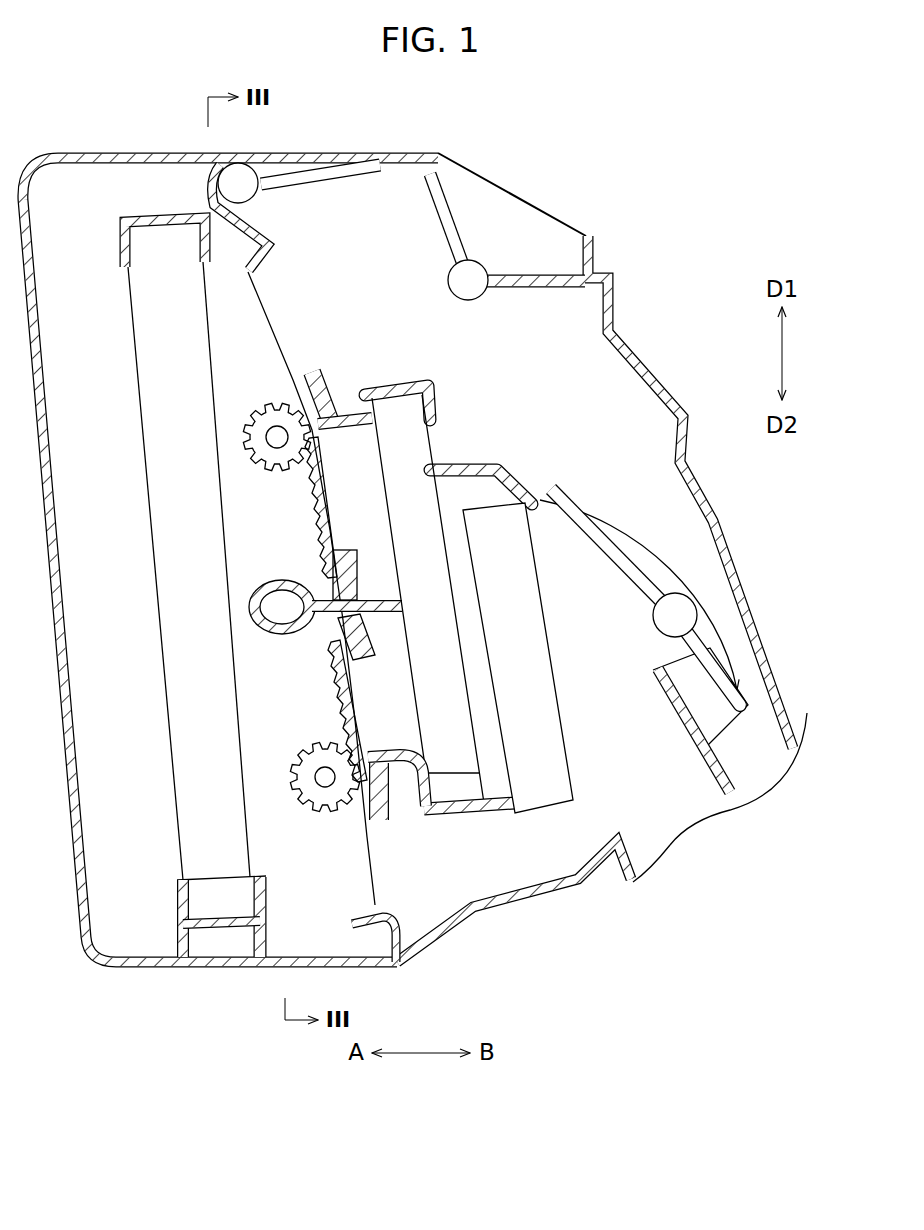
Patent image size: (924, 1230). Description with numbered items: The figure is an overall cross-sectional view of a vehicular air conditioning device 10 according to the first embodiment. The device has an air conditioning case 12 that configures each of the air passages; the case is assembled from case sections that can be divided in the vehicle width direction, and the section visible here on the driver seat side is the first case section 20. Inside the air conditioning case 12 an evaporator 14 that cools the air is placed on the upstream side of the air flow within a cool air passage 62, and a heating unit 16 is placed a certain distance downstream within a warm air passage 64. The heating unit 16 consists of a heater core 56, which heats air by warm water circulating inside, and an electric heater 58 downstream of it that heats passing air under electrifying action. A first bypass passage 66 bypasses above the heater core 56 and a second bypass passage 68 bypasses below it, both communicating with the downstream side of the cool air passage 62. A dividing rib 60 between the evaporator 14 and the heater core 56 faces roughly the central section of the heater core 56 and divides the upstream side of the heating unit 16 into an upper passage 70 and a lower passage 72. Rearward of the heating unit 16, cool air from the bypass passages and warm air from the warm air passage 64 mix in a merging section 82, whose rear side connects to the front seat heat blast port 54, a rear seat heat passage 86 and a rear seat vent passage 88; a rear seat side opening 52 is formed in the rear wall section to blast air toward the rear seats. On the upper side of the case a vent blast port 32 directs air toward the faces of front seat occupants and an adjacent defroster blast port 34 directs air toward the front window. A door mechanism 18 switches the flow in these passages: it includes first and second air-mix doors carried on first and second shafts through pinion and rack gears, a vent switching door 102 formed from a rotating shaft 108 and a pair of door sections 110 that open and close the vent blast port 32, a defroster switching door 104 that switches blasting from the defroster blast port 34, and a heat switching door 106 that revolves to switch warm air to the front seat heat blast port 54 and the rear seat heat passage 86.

The vehicular air conditioning device 10 is at (500, 110).
The air conditioning case 12 is at (88, 148).
The evaporator 14 is at (180, 561).
The heating unit 16 is at (488, 603).
The door mechanism 18 is at (338, 372).
The first case section 20 is at (514, 914).
The vent blast port 32 is at (507, 218).
The defroster blast port 34 is at (287, 160).
The rear seat side opening 52 is at (781, 740).
The front seat heat blast port 54 is at (683, 705).
The heater core 56 is at (445, 696).
The electric heater 58 is at (530, 658).
The dividing rib 60 is at (282, 633).
The cool air passage 62 is at (245, 520).
The warm air passage 64 is at (492, 497).
The first bypass passage 66 is at (285, 297).
The second bypass passage 68 is at (547, 860).
The upper passage 70 is at (250, 489).
The lower passage 72 is at (262, 672).
The merging section 82 is at (568, 535).
The rear seat heat passage 86 is at (760, 720).
The rear seat vent passage 88 is at (663, 815).
The vent switching door 102 is at (477, 273).
The defroster switching door 104 is at (298, 175).
The heat switching door 106 is at (612, 547).
The rotating shaft 108 is at (461, 283).
The door sections 110 is at (441, 223).